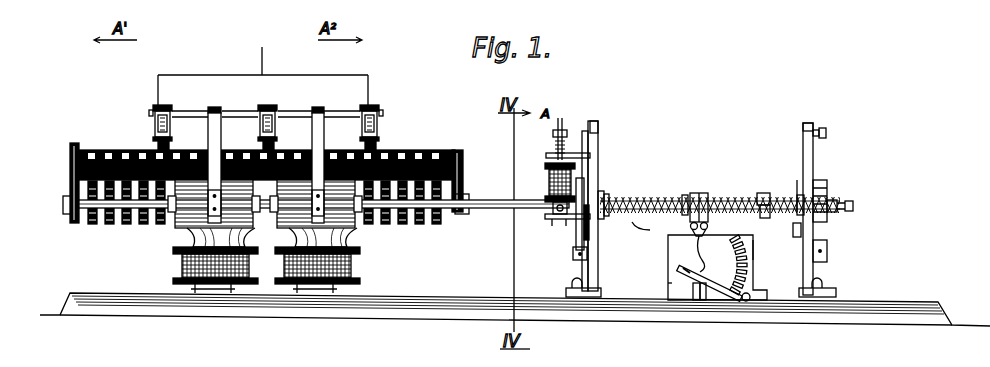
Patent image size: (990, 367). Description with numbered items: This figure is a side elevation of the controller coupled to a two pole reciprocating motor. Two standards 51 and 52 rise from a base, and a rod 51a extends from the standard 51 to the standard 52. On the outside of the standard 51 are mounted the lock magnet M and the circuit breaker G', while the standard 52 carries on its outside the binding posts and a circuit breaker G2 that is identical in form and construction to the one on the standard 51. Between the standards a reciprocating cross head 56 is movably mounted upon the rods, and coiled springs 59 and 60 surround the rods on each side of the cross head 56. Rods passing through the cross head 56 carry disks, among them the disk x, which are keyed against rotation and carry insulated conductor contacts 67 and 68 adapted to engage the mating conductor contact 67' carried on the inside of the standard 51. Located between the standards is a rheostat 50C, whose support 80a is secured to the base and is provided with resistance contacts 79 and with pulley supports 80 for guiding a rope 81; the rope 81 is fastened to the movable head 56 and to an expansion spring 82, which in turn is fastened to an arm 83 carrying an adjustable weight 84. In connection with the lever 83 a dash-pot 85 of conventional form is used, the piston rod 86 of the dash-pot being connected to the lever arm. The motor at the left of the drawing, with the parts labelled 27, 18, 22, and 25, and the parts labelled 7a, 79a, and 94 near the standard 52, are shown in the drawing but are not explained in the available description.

The terminal block 27 is at (175, 112).
The post 18 is at (222, 110).
The bus bar 22 is at (280, 120).
The terminal block 25 is at (360, 122).
The lock magnet M is at (558, 172).
The circuit breaker G' is at (574, 209).
The circuit breaker G2 is at (831, 210).
The conductor contact 68 is at (598, 218).
The standard 51 is at (599, 122).
The coiled spring 59 is at (657, 196).
The conductor contact 67 is at (616, 191).
The conductor contact 67' is at (633, 182).
The disk x is at (641, 226).
The rod 51a is at (684, 195).
The reciprocating head 56 is at (703, 194).
The coiled spring 60 is at (741, 198).
The resistance contacts 79 is at (771, 193).
The standard 52 is at (814, 125).
The knob 7a is at (828, 132).
The guide 79a is at (800, 212).
The bracket 94 is at (795, 236).
The rheostat 50C is at (703, 267).
The support 80a is at (753, 248).
The pulley supports 80 is at (692, 230).
The rope 81 is at (696, 250).
The expansion spring 82 is at (702, 270).
The piston rod 86 is at (668, 283).
The arm 83 is at (711, 301).
The dash-pot 85 is at (699, 301).
The adjustable weight 84 is at (730, 302).